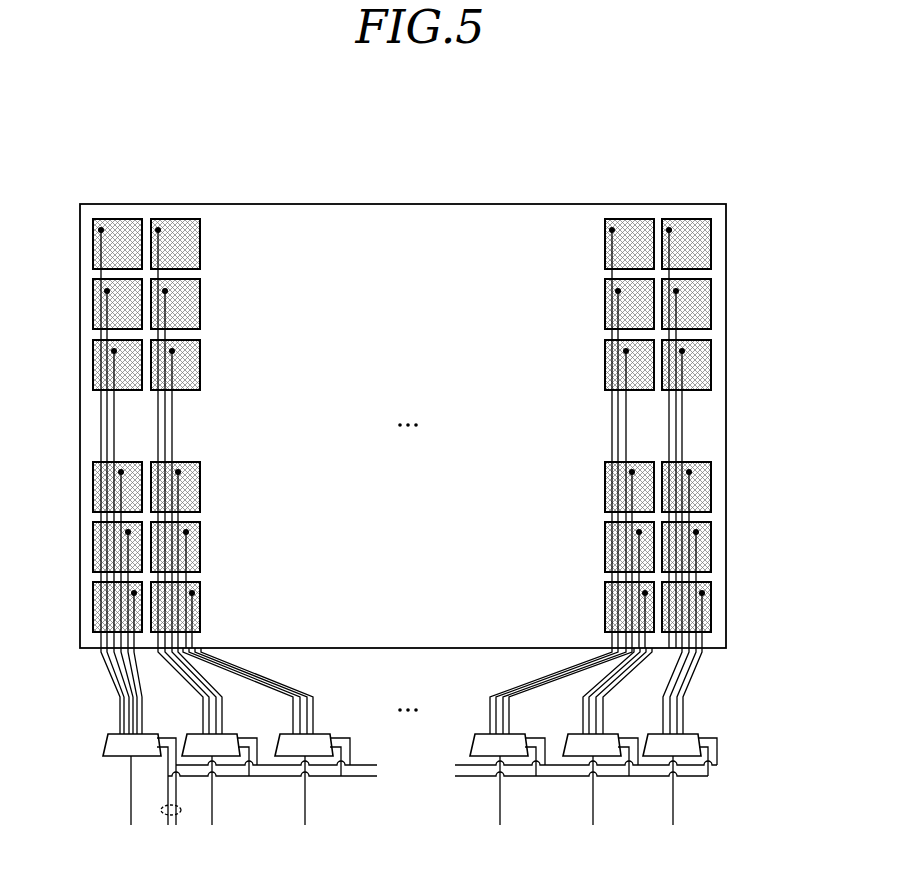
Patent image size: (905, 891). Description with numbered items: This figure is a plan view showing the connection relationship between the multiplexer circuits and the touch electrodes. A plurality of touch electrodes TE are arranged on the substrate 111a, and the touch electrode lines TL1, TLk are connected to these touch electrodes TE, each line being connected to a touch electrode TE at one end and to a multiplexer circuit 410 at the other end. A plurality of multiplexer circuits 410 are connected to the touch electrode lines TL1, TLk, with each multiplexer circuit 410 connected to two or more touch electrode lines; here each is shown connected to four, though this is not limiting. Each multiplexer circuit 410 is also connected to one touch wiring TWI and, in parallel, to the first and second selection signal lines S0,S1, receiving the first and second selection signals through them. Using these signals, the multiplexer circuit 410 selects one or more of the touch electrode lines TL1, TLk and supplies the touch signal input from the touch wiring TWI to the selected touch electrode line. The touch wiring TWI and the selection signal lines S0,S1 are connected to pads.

The substrate 111a is at (726, 241).
The touch electrode TE is at (175, 222).
The first touch electrode line TL1 is at (118, 715).
The k-th touch electrode line TLk is at (686, 715).
The multiplexer circuit 410 is at (106, 746).
The touch wiring TWI is at (715, 805).
The first and second selection signal lines S0,S1 is at (181, 810).